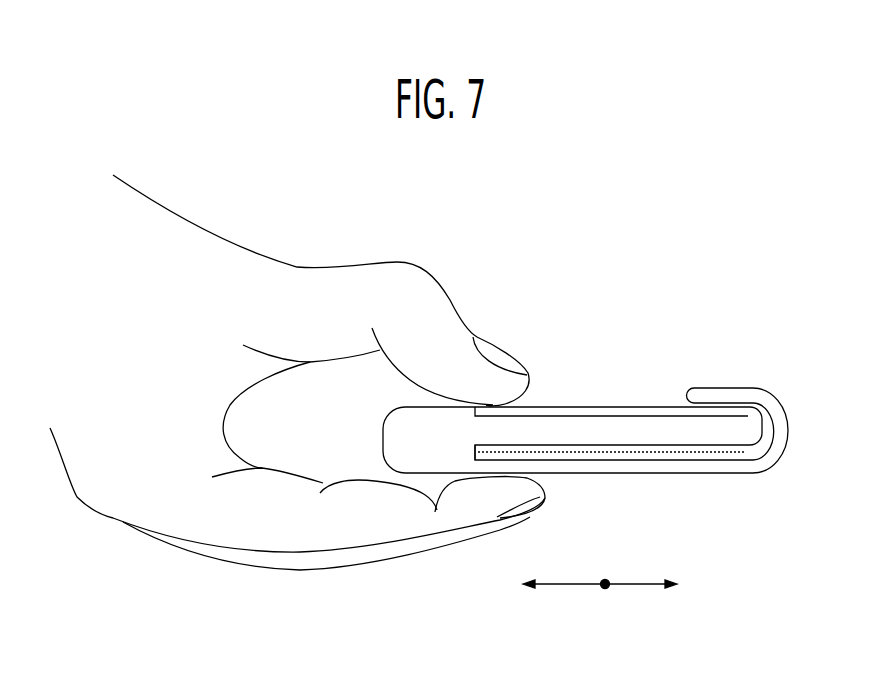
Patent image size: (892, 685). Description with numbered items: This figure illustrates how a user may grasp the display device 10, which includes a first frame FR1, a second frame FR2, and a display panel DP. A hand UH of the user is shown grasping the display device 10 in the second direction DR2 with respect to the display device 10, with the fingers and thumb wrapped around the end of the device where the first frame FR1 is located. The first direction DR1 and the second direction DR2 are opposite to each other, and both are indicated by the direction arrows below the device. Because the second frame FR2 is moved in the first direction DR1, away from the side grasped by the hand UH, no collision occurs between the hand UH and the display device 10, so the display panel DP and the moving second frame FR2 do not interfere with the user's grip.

The display device 10 is at (558, 402).
The display panel DP is at (565, 405).
The first frame FR1 is at (383, 430).
The second frame FR2 is at (773, 465).
The hand UH is at (297, 268).
The first direction DR1 is at (660, 585).
The second direction DR2 is at (548, 585).